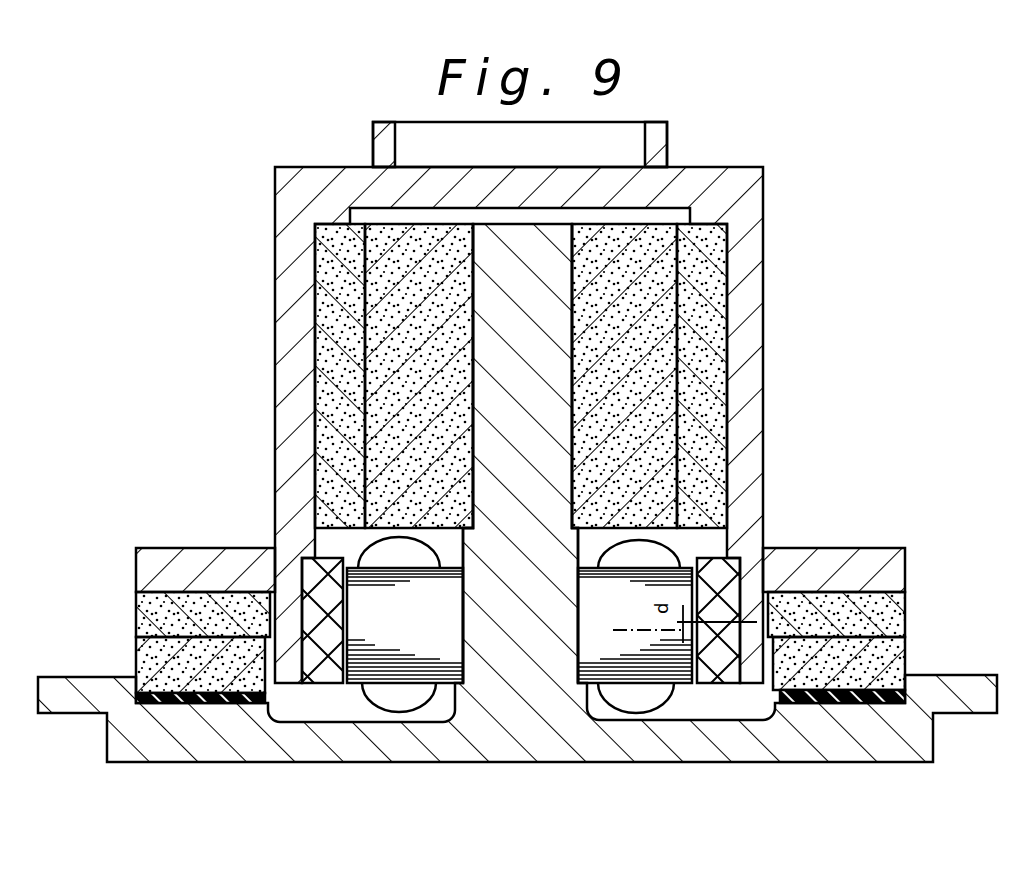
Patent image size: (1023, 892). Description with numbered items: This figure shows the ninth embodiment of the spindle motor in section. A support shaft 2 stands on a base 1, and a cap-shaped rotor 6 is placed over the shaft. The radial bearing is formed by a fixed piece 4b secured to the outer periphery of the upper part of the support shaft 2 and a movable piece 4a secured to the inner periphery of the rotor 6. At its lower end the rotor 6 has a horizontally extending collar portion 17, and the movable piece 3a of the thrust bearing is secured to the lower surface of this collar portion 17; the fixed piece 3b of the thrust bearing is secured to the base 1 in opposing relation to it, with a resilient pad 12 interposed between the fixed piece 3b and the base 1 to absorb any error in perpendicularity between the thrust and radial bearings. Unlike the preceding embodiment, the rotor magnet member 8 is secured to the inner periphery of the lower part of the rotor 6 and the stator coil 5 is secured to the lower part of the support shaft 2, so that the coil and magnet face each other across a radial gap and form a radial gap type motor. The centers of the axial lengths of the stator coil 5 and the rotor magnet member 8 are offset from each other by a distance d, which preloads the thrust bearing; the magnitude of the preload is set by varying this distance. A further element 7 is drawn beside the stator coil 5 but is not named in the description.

The base 1 is at (202, 747).
The support shaft 2 is at (538, 673).
The movable piece of thrust bearing 3a is at (200, 597).
The fixed piece of thrust bearing 3b is at (138, 667).
The movable piece of radial bearing 4a is at (712, 322).
The fixed piece of radial bearing 4b is at (663, 250).
The stator coil 5 is at (372, 663).
The rotor 6 is at (747, 182).
The left spacer ring 7 is at (307, 577).
The rotor magnet member 8 is at (730, 600).
The resilient pad 12 is at (890, 693).
The collar portion 17 is at (145, 570).